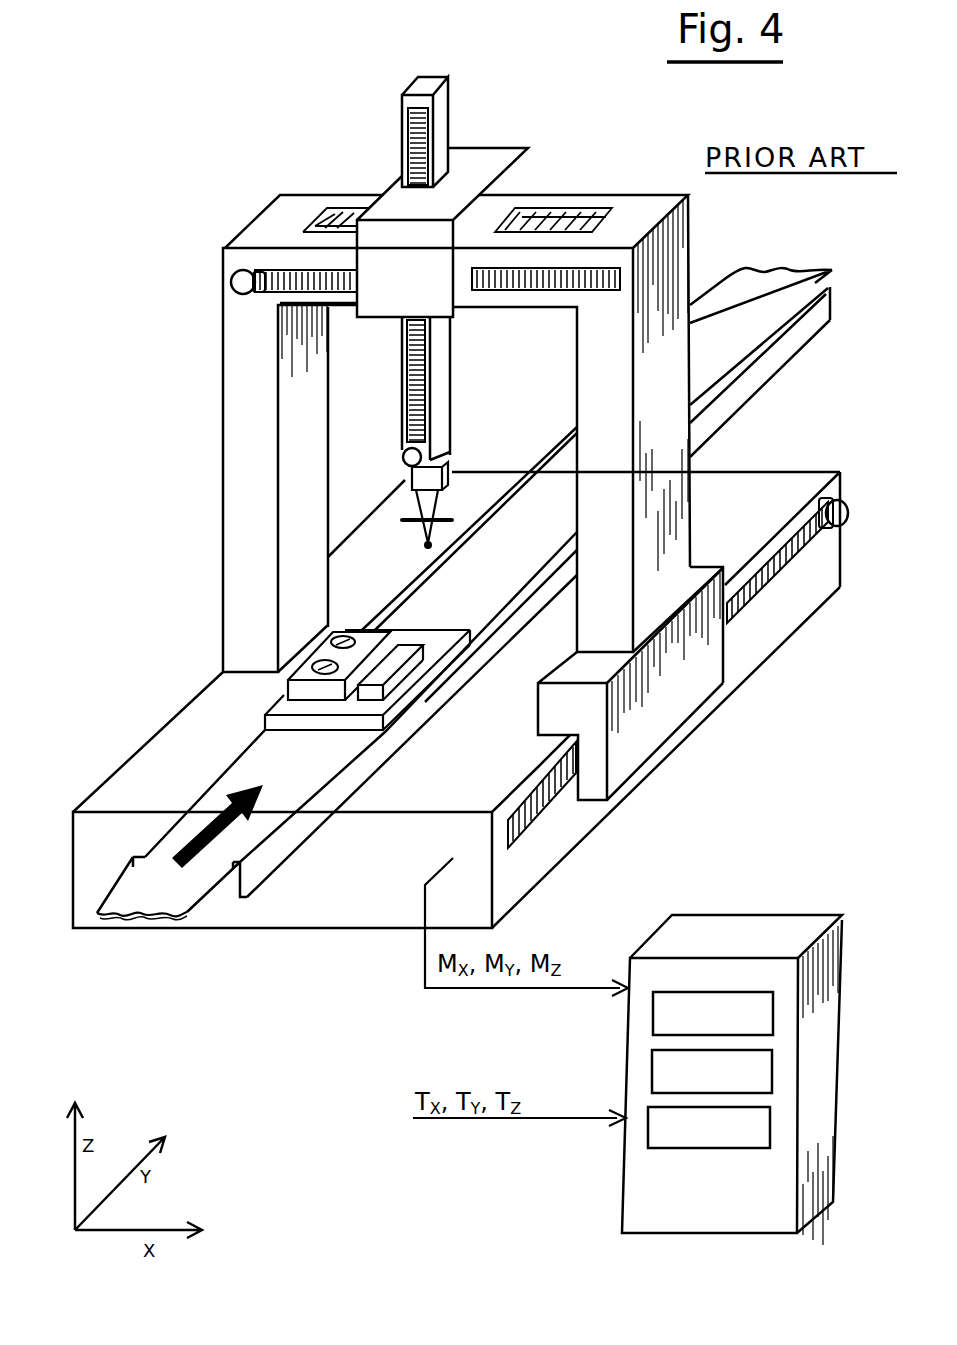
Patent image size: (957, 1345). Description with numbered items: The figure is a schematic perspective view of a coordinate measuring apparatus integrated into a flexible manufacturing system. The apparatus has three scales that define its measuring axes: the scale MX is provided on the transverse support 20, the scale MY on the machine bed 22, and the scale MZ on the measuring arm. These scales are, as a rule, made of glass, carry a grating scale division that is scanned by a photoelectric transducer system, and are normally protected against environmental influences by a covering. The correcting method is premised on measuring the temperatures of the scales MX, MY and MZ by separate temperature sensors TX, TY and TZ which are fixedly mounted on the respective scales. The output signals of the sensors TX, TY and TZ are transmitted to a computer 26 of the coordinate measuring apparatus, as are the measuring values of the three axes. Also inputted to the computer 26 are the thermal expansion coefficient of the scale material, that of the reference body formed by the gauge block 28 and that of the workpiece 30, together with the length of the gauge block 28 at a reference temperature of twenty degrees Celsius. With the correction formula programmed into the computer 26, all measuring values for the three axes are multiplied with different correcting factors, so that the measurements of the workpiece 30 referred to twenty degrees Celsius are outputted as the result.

The transverse support 20 is at (304, 259).
The machine bed 22 is at (85, 912).
The computer 26 is at (620, 1172).
The gauge block 28 is at (401, 660).
The workpiece 30 is at (324, 656).
The scale MX is at (597, 267).
The scale MY is at (550, 803).
The scale MZ is at (408, 127).
The temperature sensor TX is at (232, 280).
The temperature sensor TY is at (846, 508).
The temperature sensor TZ is at (422, 462).